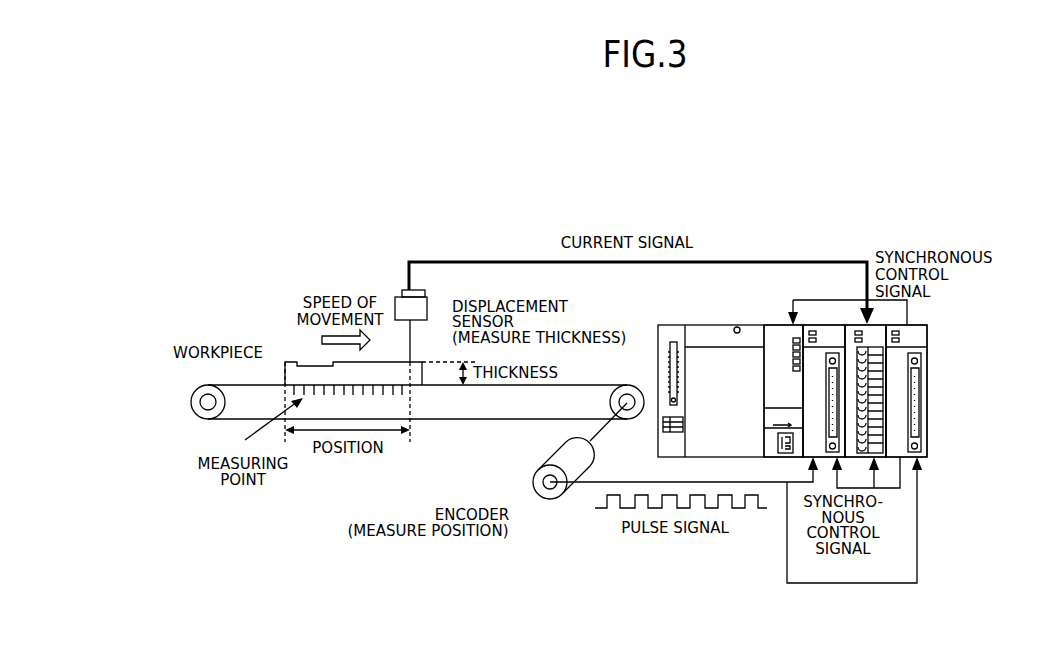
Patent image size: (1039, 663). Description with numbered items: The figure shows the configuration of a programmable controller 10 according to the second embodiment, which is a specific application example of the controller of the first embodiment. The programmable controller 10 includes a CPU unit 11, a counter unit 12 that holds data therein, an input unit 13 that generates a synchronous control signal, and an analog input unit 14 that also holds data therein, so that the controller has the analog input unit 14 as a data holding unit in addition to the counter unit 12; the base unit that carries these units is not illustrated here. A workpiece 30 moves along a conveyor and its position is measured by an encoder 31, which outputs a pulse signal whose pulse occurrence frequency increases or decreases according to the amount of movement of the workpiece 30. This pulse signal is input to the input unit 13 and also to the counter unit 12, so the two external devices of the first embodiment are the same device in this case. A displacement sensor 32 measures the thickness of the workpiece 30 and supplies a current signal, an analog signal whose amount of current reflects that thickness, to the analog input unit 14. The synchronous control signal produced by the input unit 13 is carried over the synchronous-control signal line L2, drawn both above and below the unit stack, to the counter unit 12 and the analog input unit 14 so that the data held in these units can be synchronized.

The programmable controller 10 is at (672, 322).
The CPU unit 11 is at (773, 322).
The counter unit 12 is at (810, 325).
The input unit 13 is at (928, 383).
The analog input unit 14 is at (850, 325).
The workpiece 30 is at (285, 366).
The encoder 31 is at (534, 485).
The displacement sensor 32 is at (427, 303).
The synchronous-control signal line L2 is at (907, 310).